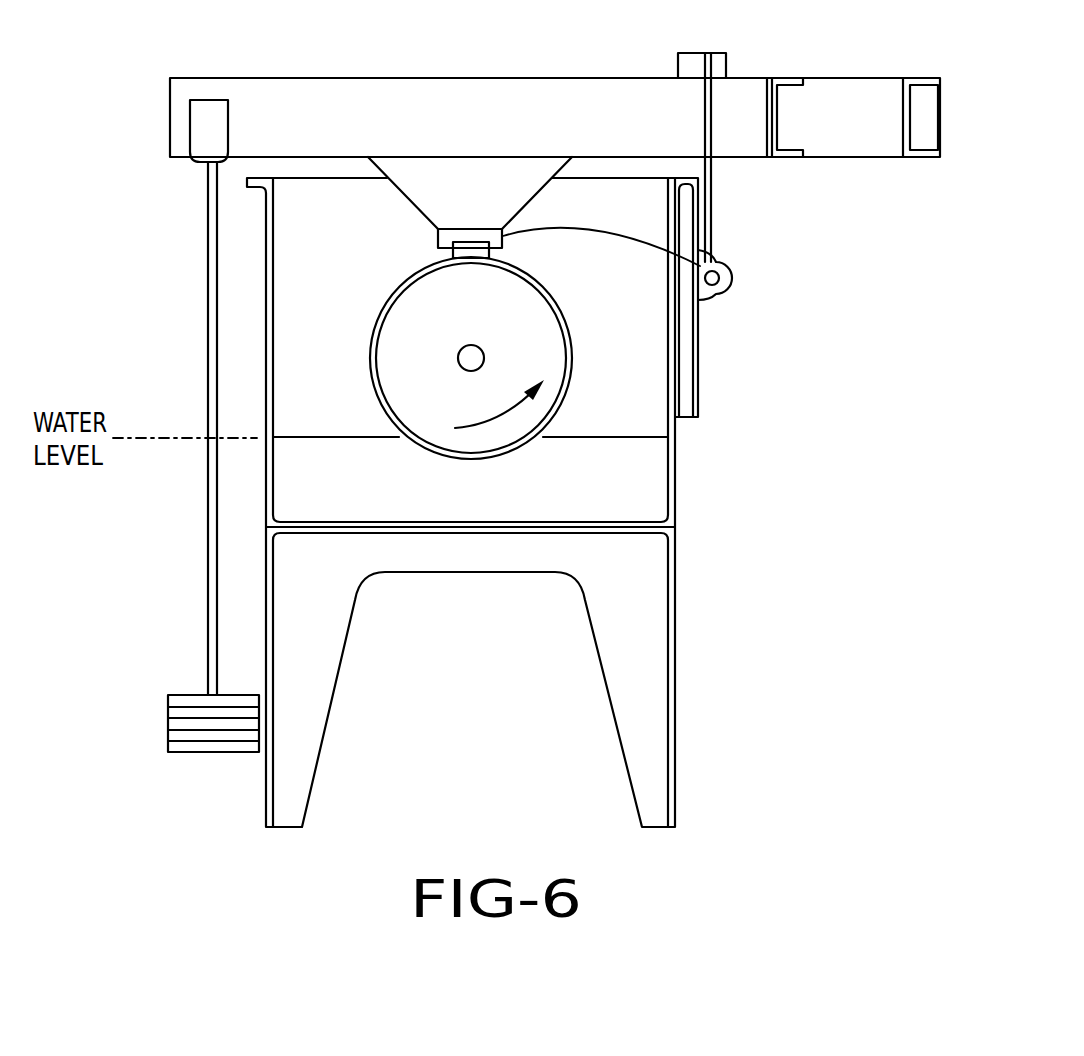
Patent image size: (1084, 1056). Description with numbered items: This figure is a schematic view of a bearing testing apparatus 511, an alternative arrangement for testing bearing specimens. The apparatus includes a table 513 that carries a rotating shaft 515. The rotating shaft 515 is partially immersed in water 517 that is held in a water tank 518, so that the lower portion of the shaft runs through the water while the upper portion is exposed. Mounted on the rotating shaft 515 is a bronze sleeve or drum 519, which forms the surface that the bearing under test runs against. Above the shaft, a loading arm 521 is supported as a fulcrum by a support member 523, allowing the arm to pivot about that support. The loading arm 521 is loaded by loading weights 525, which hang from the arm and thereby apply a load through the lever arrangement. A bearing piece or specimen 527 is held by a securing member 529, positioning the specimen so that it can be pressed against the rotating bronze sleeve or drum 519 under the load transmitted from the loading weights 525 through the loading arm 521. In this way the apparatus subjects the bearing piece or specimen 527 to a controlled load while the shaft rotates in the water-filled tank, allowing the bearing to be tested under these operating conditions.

The bearing testing apparatus 511 is at (102, 229).
The table 513 is at (676, 617).
The rotating shaft 515 is at (437, 300).
The water 517 is at (378, 496).
The water tank 518 is at (676, 470).
The bronze sleeve or drum 519 is at (372, 355).
The loading arm 521 is at (277, 78).
The support member 523 is at (711, 210).
The loading weights 525 is at (195, 752).
The bearing piece or specimen 527 is at (483, 256).
The securing member 529 is at (723, 275).